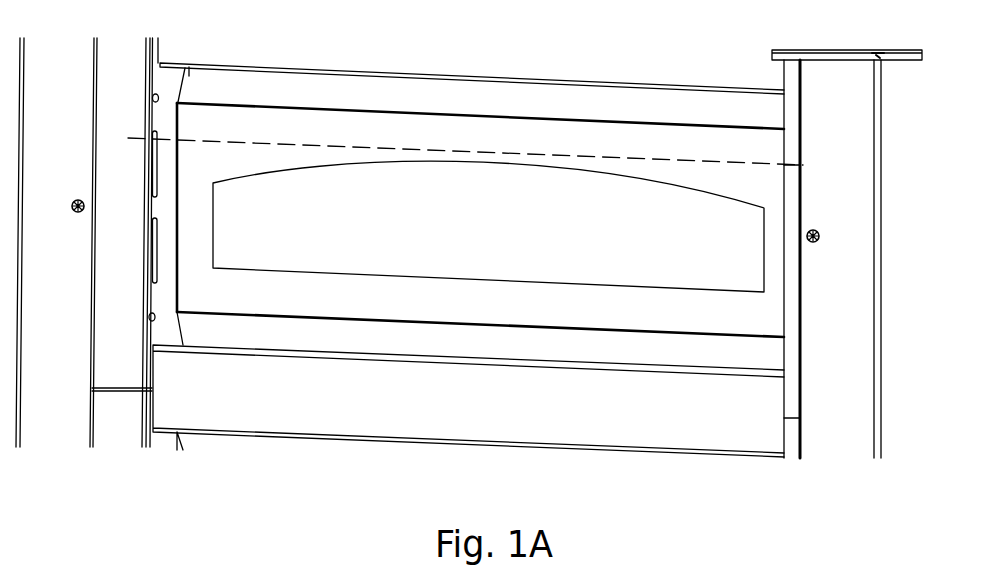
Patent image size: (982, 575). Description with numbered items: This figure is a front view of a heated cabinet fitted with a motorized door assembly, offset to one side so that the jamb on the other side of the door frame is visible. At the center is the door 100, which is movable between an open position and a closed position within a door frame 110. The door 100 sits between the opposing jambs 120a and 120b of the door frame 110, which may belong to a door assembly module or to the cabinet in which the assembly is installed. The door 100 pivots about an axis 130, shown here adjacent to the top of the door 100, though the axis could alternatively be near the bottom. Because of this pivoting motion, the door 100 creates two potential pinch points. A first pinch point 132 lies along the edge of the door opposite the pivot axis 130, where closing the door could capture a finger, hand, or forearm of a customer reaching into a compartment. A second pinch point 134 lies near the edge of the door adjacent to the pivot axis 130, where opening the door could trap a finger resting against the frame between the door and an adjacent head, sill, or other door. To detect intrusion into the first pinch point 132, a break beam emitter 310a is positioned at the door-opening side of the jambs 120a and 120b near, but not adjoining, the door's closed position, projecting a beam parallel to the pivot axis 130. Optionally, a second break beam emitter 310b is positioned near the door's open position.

The door 100 is at (488, 226).
The door frame 110 is at (577, 442).
The jamb 120a is at (100, 143).
The jamb 120b is at (795, 296).
The axis 130 is at (826, 165).
The first pinch point 132 is at (152, 330).
The second pinch point 134 is at (167, 77).
The break beam emitter 310a is at (152, 100).
The break beam emitter 310b is at (150, 318).